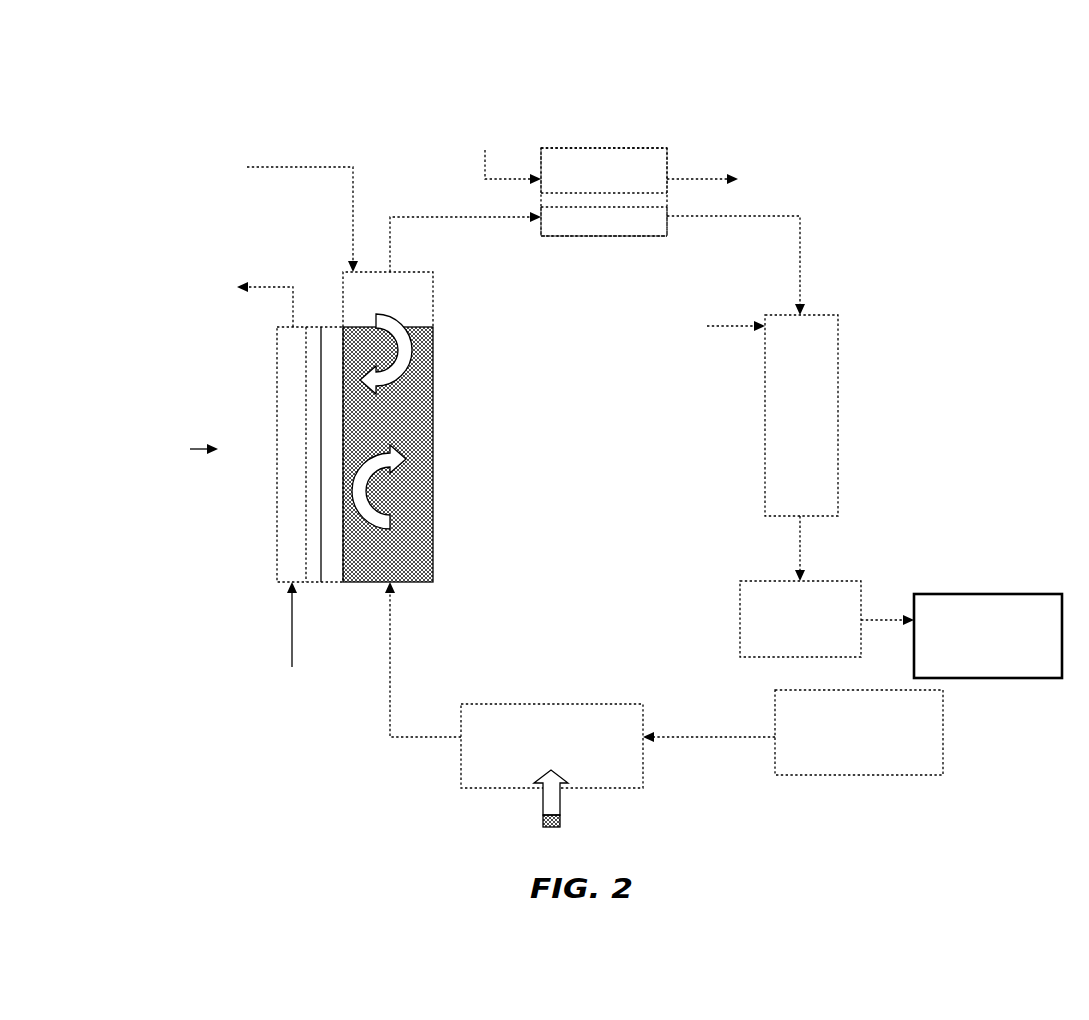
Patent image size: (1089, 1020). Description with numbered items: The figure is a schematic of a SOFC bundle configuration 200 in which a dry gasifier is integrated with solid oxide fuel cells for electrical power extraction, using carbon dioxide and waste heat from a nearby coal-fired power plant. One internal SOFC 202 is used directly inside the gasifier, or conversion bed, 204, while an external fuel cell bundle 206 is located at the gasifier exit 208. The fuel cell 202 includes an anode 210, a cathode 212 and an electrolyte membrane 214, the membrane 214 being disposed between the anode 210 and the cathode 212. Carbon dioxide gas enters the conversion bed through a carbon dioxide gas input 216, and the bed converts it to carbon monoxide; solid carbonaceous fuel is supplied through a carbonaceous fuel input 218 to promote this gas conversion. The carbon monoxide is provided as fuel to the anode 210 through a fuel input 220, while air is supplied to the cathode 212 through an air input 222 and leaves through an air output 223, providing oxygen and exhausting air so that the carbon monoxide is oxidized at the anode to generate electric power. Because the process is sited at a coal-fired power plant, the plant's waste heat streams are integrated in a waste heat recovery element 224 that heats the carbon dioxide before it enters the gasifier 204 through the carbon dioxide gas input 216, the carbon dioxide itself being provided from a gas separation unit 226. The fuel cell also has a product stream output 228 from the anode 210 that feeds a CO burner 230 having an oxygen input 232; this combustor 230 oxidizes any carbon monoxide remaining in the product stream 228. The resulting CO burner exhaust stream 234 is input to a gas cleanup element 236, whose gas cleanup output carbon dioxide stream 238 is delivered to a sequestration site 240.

The SOFC bundle configuration 200 is at (114, 92).
The internal SOFC 202 is at (180, 448).
The gasifier 204 is at (433, 492).
The external fuel cell bundle 206 is at (611, 127).
The gasifier exit 208 is at (393, 272).
The anode 210 is at (550, 237).
The cathode 212 is at (278, 400).
The electrolyte membrane 214 is at (797, 181).
The carbon dioxide gas input 216 is at (390, 662).
The carbonaceous fuel input 218 is at (279, 167).
The fuel input 220 is at (450, 217).
The air input 222 is at (290, 655).
The air output 223 is at (262, 287).
The waste heat recovery element 224 is at (505, 704).
The gas separation unit 226 is at (816, 775).
The product stream output 228 is at (800, 235).
The CO burner 230 is at (838, 378).
The O2 input 232 is at (725, 322).
The CO burner exhaust stream 234 is at (800, 557).
The gas cleanup element 236 is at (750, 581).
The gas cleanup output CO2 stream 238 is at (868, 618).
The sequestration site 240 is at (958, 594).